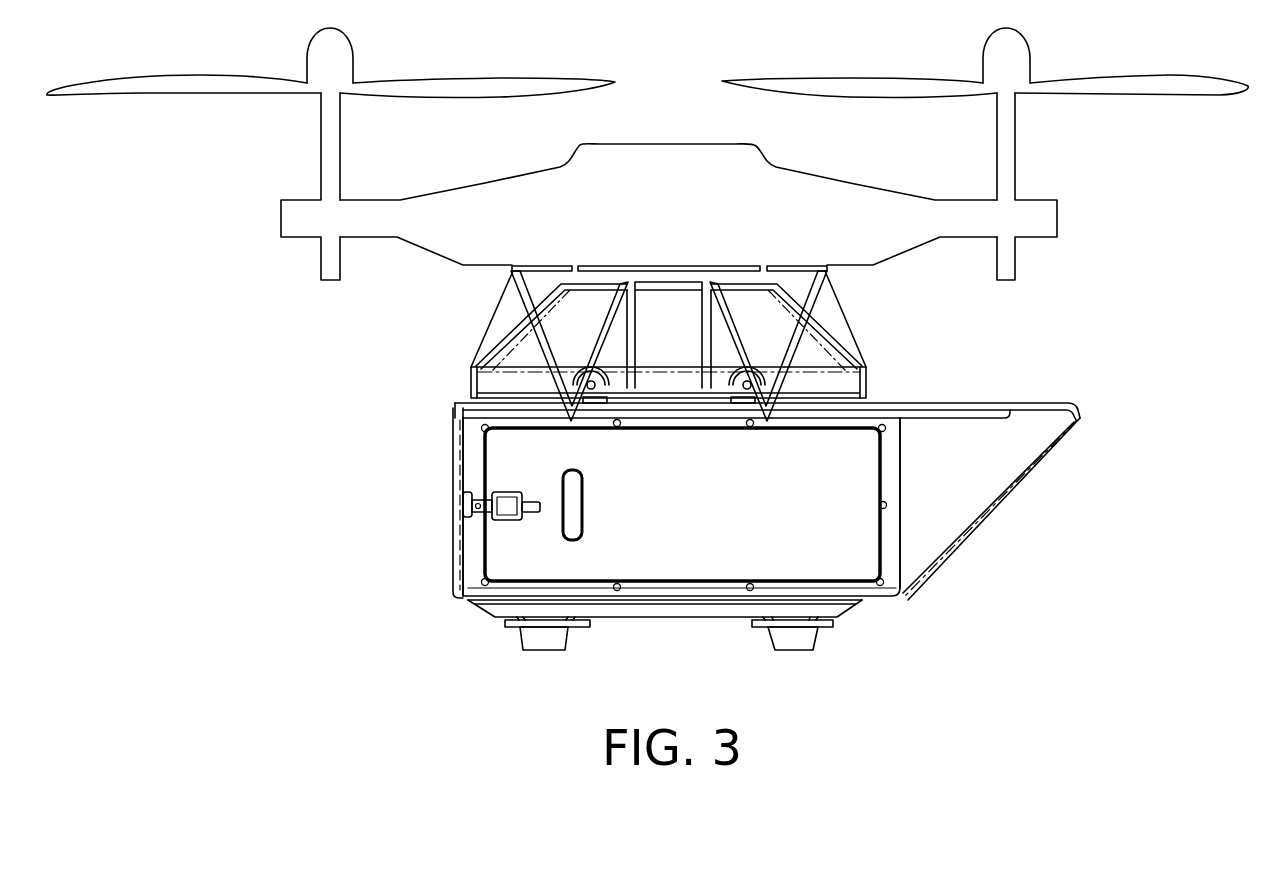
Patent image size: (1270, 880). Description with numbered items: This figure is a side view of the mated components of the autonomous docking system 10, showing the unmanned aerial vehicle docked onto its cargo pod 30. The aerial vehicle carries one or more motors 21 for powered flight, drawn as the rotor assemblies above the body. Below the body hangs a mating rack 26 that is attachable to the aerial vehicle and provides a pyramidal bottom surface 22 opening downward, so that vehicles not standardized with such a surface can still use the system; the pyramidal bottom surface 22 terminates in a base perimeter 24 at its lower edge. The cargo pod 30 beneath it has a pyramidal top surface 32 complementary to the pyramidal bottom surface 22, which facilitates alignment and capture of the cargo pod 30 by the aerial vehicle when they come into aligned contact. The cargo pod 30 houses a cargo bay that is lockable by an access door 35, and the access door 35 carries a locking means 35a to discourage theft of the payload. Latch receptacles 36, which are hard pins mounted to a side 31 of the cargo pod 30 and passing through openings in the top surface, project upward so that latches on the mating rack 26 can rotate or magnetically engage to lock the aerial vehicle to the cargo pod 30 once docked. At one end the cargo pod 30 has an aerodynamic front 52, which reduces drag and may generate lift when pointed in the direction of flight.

The autonomous docking system 10 is at (328, 641).
The motors 21 is at (327, 130).
The pyramidal bottom surface 22 is at (830, 336).
The base perimeter 24 is at (883, 408).
The mating rack 26 is at (822, 284).
The cargo pod 30 is at (396, 470).
The side 31 is at (890, 555).
The pyramidal top surface 32 is at (828, 366).
The access door 35 is at (640, 552).
The locking means 35a is at (506, 518).
The latch receptacles 36 is at (596, 400).
The aerodynamic front 52 is at (1082, 426).